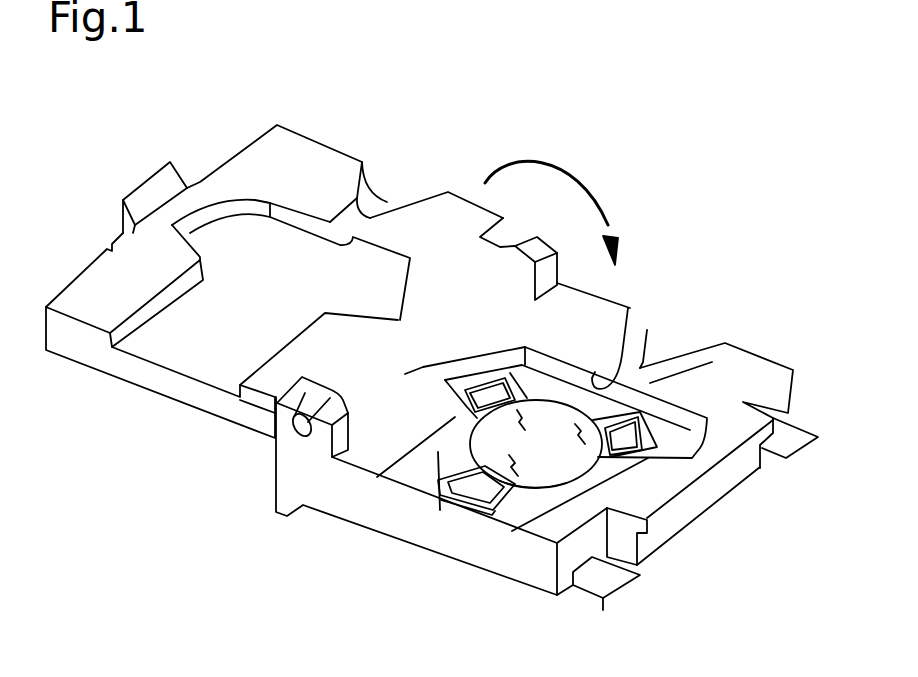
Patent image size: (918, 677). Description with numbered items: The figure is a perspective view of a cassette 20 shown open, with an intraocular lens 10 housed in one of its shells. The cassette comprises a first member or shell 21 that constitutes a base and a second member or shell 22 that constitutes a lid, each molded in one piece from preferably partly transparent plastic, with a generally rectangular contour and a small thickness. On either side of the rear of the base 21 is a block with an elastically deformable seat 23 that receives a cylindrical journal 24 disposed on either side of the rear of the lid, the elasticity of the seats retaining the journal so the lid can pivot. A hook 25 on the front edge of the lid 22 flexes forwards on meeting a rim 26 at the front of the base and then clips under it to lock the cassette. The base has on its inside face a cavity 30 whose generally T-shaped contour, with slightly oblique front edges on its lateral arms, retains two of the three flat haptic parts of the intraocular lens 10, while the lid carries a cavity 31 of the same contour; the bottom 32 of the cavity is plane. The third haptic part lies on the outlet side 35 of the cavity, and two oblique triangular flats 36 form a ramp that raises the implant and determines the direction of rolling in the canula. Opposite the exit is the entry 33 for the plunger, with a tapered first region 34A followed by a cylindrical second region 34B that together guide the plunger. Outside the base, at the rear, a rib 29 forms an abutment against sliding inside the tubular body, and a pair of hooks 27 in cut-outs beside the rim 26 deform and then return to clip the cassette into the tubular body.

The intraocular lens 10 is at (505, 437).
The cassette 20 is at (667, 160).
The first member or shell 21 is at (355, 510).
The second member or shell 22 is at (83, 355).
The elastically deformable seat 23 is at (505, 250).
The journal 24 is at (530, 240).
The hook 25 is at (152, 183).
The rim 26 is at (745, 452).
The hooks 27 is at (812, 440).
The rib 29 is at (288, 508).
The cavity 30 is at (557, 460).
The cavity 31 is at (243, 250).
The bottom 32 is at (672, 420).
The entry 33 is at (665, 340).
The tapered first region 34A is at (647, 345).
The cylindrical second region 34B is at (610, 370).
The outlet side 35 is at (428, 500).
The oblique triangular flats 36 is at (413, 473).